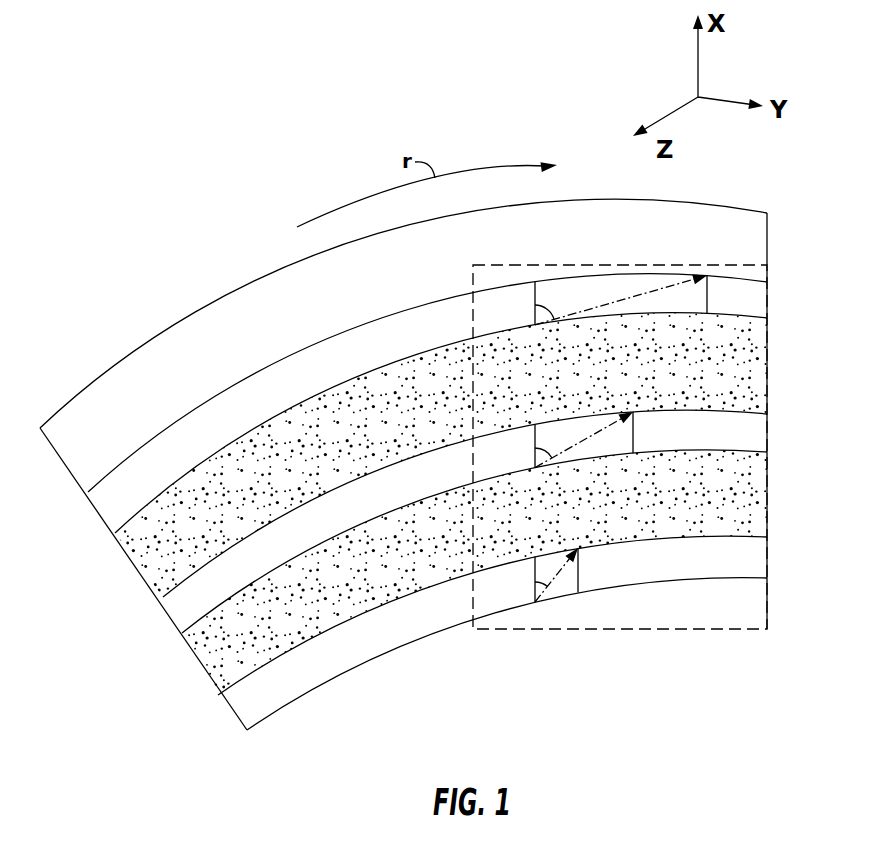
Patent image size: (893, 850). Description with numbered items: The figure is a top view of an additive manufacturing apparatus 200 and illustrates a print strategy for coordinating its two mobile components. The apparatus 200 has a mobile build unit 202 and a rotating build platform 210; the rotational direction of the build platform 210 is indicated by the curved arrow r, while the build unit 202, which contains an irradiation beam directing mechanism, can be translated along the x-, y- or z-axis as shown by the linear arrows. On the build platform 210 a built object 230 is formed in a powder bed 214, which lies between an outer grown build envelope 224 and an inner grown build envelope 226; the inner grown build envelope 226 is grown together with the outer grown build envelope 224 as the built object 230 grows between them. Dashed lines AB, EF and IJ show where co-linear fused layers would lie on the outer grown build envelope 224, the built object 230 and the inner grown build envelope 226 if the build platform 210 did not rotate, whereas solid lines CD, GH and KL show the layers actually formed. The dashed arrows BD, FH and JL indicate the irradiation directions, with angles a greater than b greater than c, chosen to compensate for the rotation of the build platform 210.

The apparatus 200 is at (206, 218).
The mobile build unit 202 is at (629, 265).
The rotating build platform 210 is at (218, 302).
The outer grown build envelope 224 is at (228, 420).
The powder bed 214 is at (150, 557).
The built object 230 is at (190, 600).
The inner grown build envelope 226 is at (300, 672).